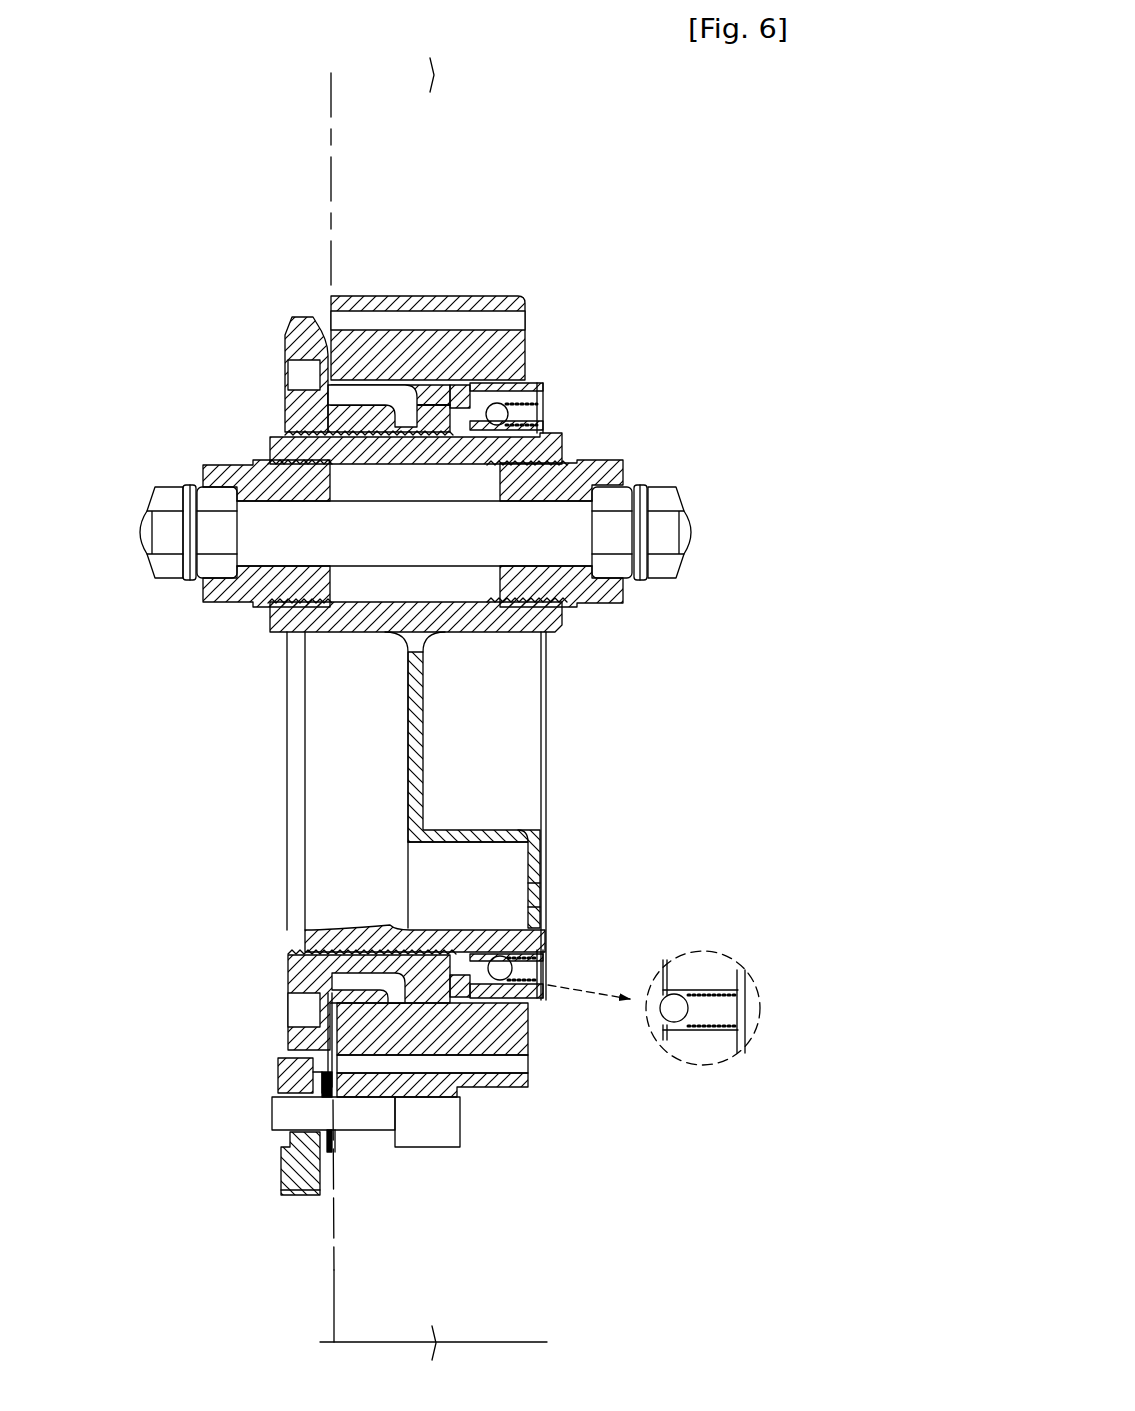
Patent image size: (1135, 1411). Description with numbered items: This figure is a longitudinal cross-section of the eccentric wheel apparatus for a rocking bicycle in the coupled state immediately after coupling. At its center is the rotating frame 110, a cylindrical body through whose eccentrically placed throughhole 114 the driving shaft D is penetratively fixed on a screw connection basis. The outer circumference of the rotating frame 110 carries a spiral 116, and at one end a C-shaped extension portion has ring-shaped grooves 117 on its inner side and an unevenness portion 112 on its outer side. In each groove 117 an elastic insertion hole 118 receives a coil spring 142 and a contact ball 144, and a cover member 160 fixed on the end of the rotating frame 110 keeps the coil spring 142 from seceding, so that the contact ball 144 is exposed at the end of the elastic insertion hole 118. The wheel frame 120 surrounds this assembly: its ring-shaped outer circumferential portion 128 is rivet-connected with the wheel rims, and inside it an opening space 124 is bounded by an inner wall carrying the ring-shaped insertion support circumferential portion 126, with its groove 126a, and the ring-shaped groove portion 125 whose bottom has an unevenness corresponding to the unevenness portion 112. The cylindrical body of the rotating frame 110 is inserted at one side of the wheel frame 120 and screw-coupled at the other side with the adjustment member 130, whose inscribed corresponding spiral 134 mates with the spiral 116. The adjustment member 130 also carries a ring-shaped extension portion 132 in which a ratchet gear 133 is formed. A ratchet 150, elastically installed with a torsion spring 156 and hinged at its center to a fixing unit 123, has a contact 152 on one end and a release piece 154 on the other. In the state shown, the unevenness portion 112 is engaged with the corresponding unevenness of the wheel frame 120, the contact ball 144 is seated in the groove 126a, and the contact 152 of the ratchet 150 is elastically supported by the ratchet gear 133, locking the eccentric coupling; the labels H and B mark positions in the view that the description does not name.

The rotating frame 110 is at (565, 633).
The unevenness portion 112 is at (416, 420).
The throughhole 114 is at (552, 482).
The spiral 116 is at (277, 398).
The ring-shaped grooves 117 is at (410, 383).
The elastic insertion hole 118 is at (760, 1024).
The wheel frame 120 is at (478, 268).
The fixing unit 123 is at (440, 1130).
The opening space 124 is at (470, 922).
The ring-shaped groove portion 125 is at (445, 380).
The insertion support circumferential portion 126 is at (550, 355).
The groove 126a is at (672, 1040).
The ring-shaped outer circumferential portion 128 is at (527, 330).
The adjustment member 130 is at (239, 333).
The ring-shaped extension portion 132 is at (312, 340).
The ratchet gear 133 is at (282, 1066).
The corresponding spiral 134 is at (300, 415).
The coil spring 142 is at (545, 395).
The contact ball 144 is at (550, 420).
The ratchet 150 is at (282, 1196).
The contact 152 is at (272, 1112).
The release piece 154 is at (318, 1196).
The torsion spring 156 is at (335, 1152).
The cover member 160 is at (550, 765).
The hub axis H is at (510, 95).
The driving shaft D is at (698, 532).
The bolt B is at (275, 1130).